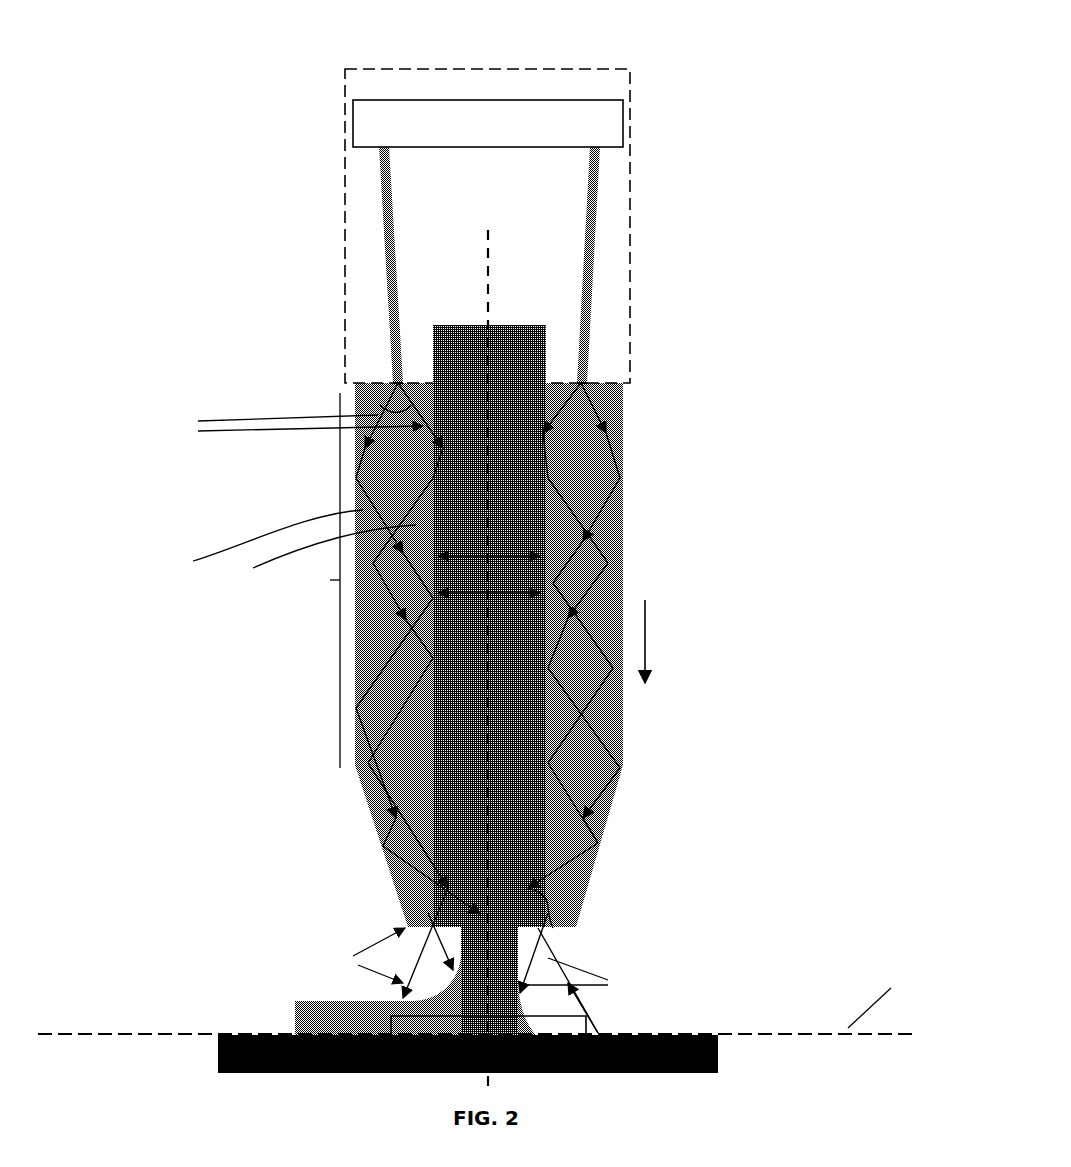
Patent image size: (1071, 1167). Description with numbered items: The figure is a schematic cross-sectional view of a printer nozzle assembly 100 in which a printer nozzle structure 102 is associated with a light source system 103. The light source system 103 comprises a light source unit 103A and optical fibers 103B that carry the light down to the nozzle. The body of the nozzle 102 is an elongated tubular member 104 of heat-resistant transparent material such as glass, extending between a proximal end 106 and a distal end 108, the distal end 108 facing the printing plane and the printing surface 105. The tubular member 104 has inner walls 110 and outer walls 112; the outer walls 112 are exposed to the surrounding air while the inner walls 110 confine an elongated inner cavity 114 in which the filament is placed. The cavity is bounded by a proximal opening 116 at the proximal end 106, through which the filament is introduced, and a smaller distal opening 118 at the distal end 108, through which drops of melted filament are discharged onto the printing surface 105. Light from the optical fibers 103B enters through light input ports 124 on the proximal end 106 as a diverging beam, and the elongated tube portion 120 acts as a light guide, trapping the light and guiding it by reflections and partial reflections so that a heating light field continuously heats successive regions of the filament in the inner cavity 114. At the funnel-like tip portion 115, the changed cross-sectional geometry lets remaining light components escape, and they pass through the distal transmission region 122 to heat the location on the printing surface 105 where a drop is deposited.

The printer nozzle assembly 100 is at (248, 125).
The printer nozzle structure 102 is at (345, 382).
The light source system 103 is at (632, 70).
The light source unit 103A is at (605, 112).
The optical fibers 103B is at (382, 190).
The elongated tubular member 104 is at (575, 533).
The printing surface 105 is at (650, 1025).
The proximal end 106 is at (474, 632).
The distal end 108 is at (398, 919).
The inner walls 110 is at (420, 590).
The outer walls 112 is at (615, 505).
The elongated inner cavity 114 is at (518, 648).
The funnel-like tip portion 115 is at (350, 798).
The proximal opening 116 is at (487, 375).
The distal opening 118 is at (470, 905).
The elongated tube portion 120 is at (316, 580).
The distal transmission region 122 is at (540, 875).
The light input ports 124 is at (390, 375).